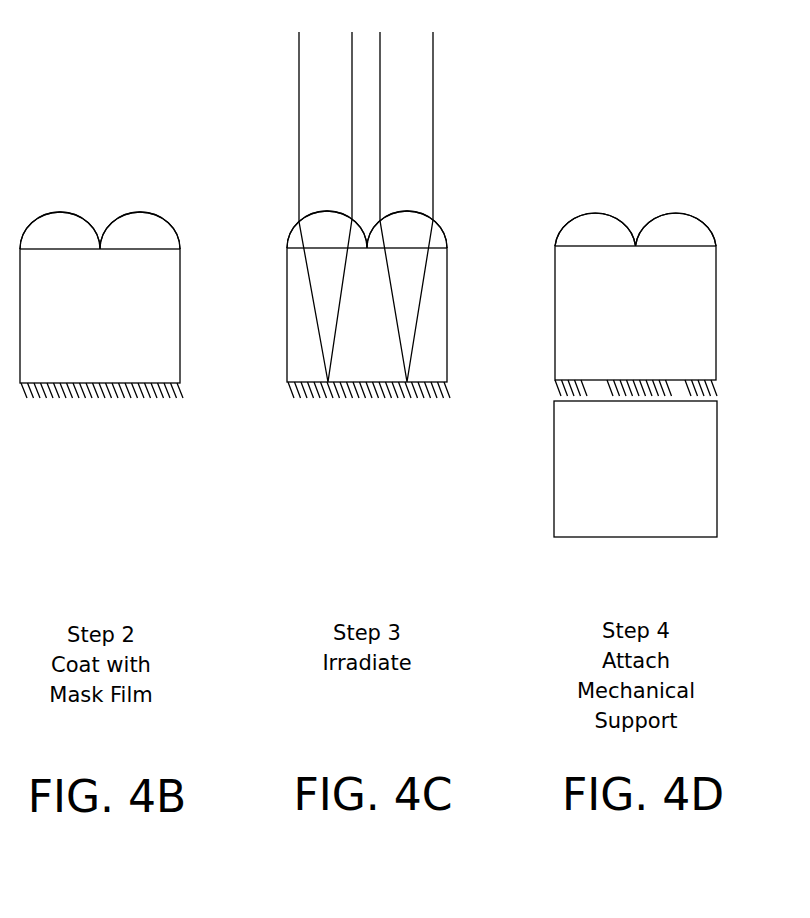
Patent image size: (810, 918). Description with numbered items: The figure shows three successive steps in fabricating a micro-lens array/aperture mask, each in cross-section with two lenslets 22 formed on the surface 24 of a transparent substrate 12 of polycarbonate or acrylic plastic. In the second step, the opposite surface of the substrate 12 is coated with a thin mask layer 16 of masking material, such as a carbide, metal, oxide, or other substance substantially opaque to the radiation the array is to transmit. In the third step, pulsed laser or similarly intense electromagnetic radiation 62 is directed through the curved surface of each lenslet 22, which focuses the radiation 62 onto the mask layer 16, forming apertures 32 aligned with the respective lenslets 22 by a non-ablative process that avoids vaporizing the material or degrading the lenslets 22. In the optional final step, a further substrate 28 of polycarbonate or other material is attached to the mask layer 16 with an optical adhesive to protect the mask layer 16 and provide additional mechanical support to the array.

In FIG. 4B, the substrate 12 is at (181, 352).
In FIG. 4C, the substrate 12 is at (448, 352).
In FIG. 4D, the substrate 12 is at (717, 349).
In FIG. 4B, the mask layer 16 is at (165, 388).
In FIG. 4C, the mask layer 16 is at (425, 388).
In FIG. 4B, the lenslets 22 is at (55, 212).
In FIG. 4C, the lenslets 22 is at (292, 233).
In FIG. 4D, the lenslets 22 is at (590, 208).
In FIG. 4B, the surface 24 is at (180, 245).
In FIG. 4C, the surface 24 is at (447, 245).
In FIG. 4D, the surface 24 is at (716, 242).
In FIG. 4D, the substrate 28 is at (554, 505).
In FIG. 4D, the apertures 32 is at (593, 380).
In FIG. 4C, the electromagnetic radiation 62 is at (299, 92).